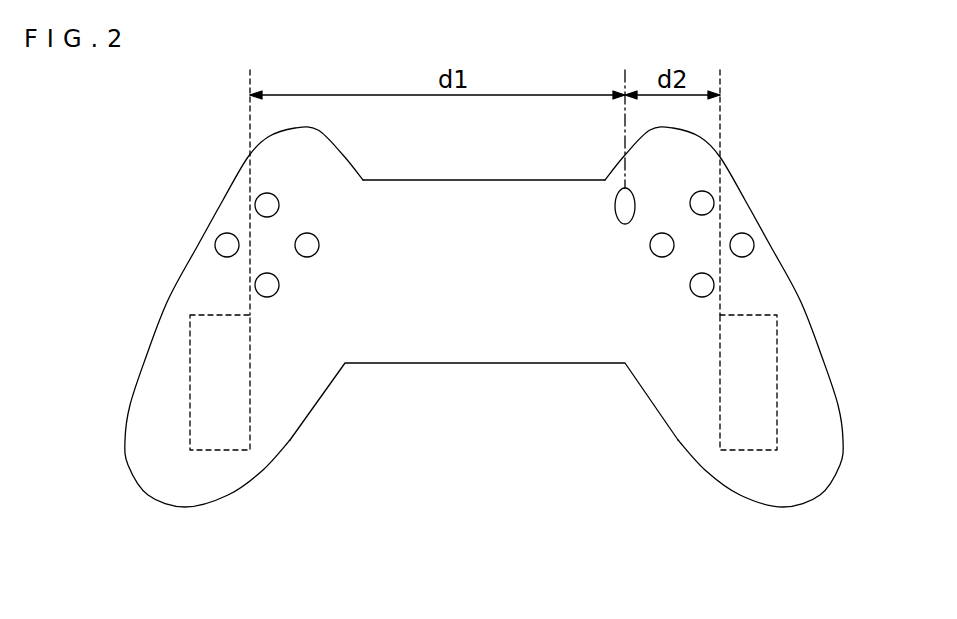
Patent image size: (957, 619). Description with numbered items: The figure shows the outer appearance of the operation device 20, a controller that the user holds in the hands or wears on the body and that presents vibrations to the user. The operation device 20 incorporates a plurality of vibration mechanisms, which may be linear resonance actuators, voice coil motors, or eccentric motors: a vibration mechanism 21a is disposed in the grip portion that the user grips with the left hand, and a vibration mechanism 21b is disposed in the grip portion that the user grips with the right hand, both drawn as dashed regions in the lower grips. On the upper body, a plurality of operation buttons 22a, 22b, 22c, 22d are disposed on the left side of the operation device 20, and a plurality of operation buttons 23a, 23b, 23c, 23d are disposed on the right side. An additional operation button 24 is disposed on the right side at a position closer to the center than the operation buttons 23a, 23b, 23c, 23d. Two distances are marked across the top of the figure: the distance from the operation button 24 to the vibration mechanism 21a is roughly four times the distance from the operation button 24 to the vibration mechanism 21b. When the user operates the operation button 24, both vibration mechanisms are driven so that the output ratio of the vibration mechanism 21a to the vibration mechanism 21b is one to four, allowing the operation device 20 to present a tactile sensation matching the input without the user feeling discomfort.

The operation device 20 is at (531, 408).
The vibration mechanism 21a is at (190, 358).
The vibration mechanism 21b is at (778, 358).
The operation button 22a is at (262, 194).
The operation button 22b is at (215, 244).
The operation button 22c is at (257, 277).
The operation button 22d is at (310, 257).
The operation button 23a is at (706, 193).
The operation button 23b is at (657, 257).
The operation button 23c is at (712, 277).
The operation button 23d is at (754, 245).
The operation button 24 is at (615, 213).